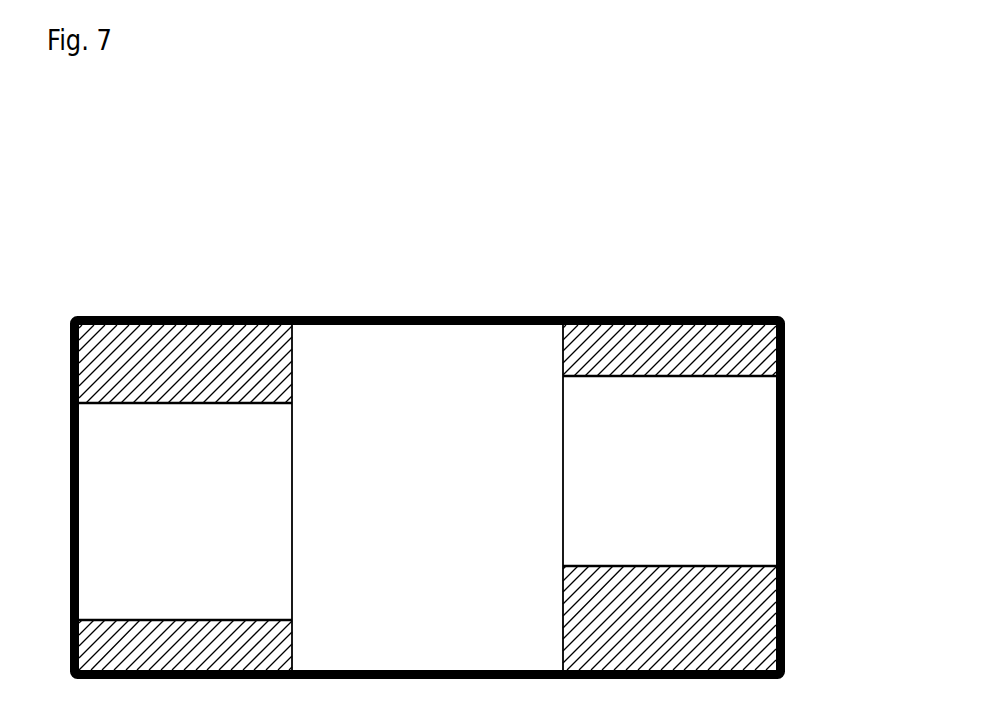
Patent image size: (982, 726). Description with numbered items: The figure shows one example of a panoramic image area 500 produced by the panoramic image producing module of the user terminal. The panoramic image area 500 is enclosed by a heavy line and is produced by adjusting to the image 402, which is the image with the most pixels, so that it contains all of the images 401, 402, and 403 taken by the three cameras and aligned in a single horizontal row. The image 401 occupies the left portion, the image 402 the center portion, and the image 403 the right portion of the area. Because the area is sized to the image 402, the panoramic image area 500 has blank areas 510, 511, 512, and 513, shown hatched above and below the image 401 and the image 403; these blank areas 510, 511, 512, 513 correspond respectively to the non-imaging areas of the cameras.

The image 401 is at (93, 438).
The image 402 is at (487, 342).
The image 403 is at (770, 437).
The panoramic image area 500 is at (785, 371).
The blank area 510 is at (93, 353).
The blank area 511 is at (93, 652).
The blank area 512 is at (765, 340).
The blank area 513 is at (765, 595).